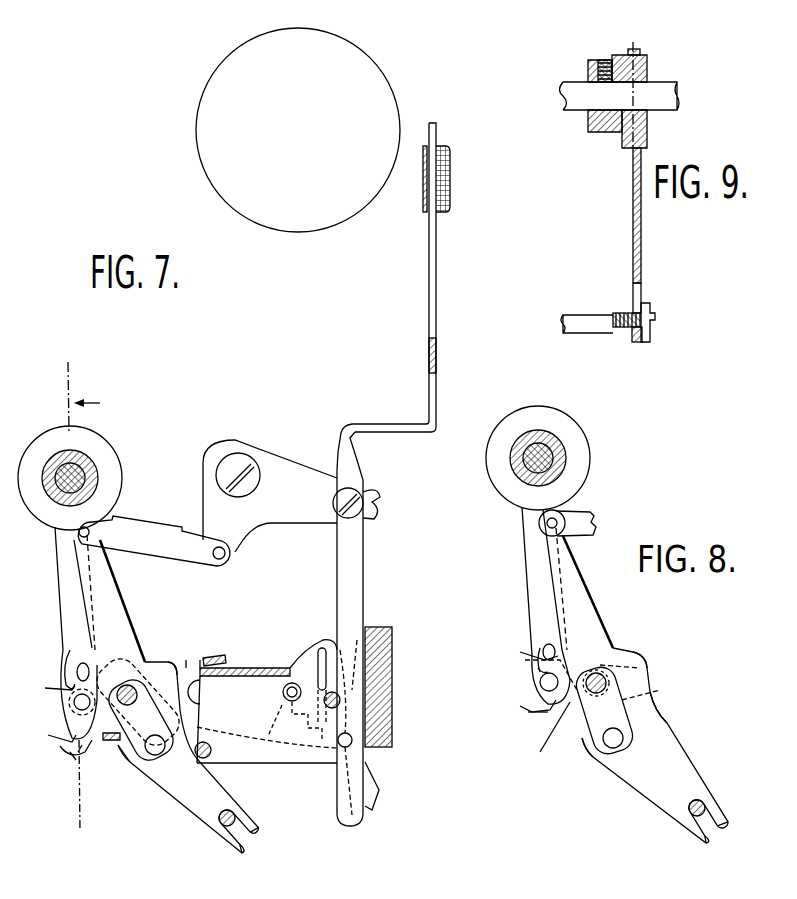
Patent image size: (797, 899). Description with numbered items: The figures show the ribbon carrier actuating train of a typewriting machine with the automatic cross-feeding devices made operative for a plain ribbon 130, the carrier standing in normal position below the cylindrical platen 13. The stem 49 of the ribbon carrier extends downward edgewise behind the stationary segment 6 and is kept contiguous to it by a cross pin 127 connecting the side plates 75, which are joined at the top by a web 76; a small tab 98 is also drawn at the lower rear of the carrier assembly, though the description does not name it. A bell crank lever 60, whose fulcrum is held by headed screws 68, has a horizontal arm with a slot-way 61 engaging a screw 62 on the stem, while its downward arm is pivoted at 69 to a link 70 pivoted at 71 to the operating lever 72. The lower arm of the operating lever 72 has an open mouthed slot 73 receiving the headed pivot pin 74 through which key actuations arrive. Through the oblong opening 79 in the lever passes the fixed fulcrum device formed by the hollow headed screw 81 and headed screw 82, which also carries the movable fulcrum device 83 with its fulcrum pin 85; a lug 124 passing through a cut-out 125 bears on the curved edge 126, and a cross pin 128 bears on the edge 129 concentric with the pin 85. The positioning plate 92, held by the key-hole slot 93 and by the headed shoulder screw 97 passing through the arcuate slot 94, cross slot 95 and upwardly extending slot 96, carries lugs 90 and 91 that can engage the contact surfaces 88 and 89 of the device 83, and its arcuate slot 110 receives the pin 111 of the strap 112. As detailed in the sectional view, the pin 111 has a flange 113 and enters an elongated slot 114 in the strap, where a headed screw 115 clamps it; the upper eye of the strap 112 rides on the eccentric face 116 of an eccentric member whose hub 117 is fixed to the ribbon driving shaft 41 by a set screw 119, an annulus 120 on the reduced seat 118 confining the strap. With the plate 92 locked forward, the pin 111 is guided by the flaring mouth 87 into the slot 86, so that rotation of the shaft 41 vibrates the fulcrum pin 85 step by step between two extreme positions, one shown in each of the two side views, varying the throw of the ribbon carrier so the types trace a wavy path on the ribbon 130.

In FIG. 7, the stationary segment 6 is at (392, 690).
In FIG. 7, the cylindrical platen 13 is at (393, 91).
In FIG. 7, the ribbon driving shaft 41 is at (63, 467).
In FIG. 8, the ribbon driving shaft 41 is at (522, 462).
In FIG. 9, the ribbon driving shaft 41 is at (665, 83).
In FIG. 7, the stem 49 is at (437, 403).
In FIG. 7, the bell crank lever 60 is at (270, 454).
In FIG. 7, the slot-way 61 is at (370, 505).
In FIG. 7, the screw 62 is at (348, 518).
In FIG. 7, the headed screws 68 is at (236, 496).
In FIG. 7, the pivot 69 is at (220, 560).
In FIG. 7, the link 70 is at (140, 532).
In FIG. 8, the link 70 is at (598, 520).
In FIG. 7, the pivot 71 is at (88, 526).
In FIG. 8, the pivot 71 is at (548, 515).
In FIG. 7, the operating lever 72 is at (122, 600).
In FIG. 8, the operating lever 72 is at (582, 575).
In FIG. 7, the open mouthed slot 73 is at (248, 840).
In FIG. 8, the open mouthed slot 73 is at (714, 832).
In FIG. 7, the headed pivot pin 74 is at (233, 818).
In FIG. 8, the headed pivot pin 74 is at (705, 808).
In FIG. 7, the side plates 75 is at (280, 763).
In FIG. 7, the web 76 is at (242, 676).
In FIG. 7, the oblong opening 79 is at (135, 755).
In FIG. 8, the oblong opening 79 is at (588, 740).
In FIG. 7, the hollow headed screw 81 is at (127, 685).
In FIG. 8, the hollow headed screw 81 is at (596, 674).
In FIG. 8, the headed screw 82 is at (597, 694).
In FIG. 7, the movable fulcrum device 83 is at (160, 765).
In FIG. 8, the movable fulcrum device 83 is at (563, 705).
In FIG. 7, the fulcrum pin 85 is at (158, 750).
In FIG. 8, the fulcrum pin 85 is at (618, 744).
In FIG. 7, the slot 86 is at (70, 755).
In FIG. 8, the slot 86 is at (551, 739).
In FIG. 7, the flaring mouth 87 is at (62, 690).
In FIG. 8, the flaring mouth 87 is at (526, 660).
In FIG. 7, the contact surface 88 is at (70, 680).
In FIG. 8, the contact surface 88 is at (551, 656).
In FIG. 7, the contact surface 89 is at (64, 748).
In FIG. 8, the contact surface 89 is at (535, 713).
In FIG. 7, the lug 90 is at (102, 662).
In FIG. 7, the lug 91 is at (112, 740).
In FIG. 7, the positioning plate 92 is at (78, 752).
In FIG. 7, the key-hole slot 93 is at (186, 660).
In FIG. 7, the arcuate slot 94 is at (321, 648).
In FIG. 7, the cross slot 95 is at (306, 721).
In FIG. 7, the upwardly extending slot 96 is at (268, 731).
In FIG. 7, the headed shoulder screw 97 is at (284, 698).
In FIG. 7, the tab 98 is at (372, 788).
In FIG. 7, the arcuate slot 110 is at (98, 785).
In FIG. 7, the pin 111 is at (72, 702).
In FIG. 8, the pin 111 is at (540, 685).
In FIG. 9, the pin 111 is at (583, 328).
In FIG. 7, the strap 112 is at (60, 578).
In FIG. 8, the strap 112 is at (528, 578).
In FIG. 9, the strap 112 is at (642, 242).
In FIG. 8, the flange 113 is at (540, 673).
In FIG. 9, the flange 113 is at (631, 311).
In FIG. 7, the elongated slot 114 is at (82, 662).
In FIG. 8, the elongated slot 114 is at (560, 653).
In FIG. 9, the elongated slot 114 is at (642, 295).
In FIG. 9, the headed screw 115 is at (650, 310).
In FIG. 7, the eccentric face 116 is at (88, 460).
In FIG. 8, the eccentric face 116 is at (557, 438).
In FIG. 9, the eccentric face 116 is at (634, 53).
In FIG. 9, the hub 117 is at (601, 133).
In FIG. 9, the reduced seat 118 is at (645, 122).
In FIG. 9, the set screw 119 is at (604, 59).
In FIG. 9, the annulus 120 is at (648, 56).
In FIG. 7, the lug 124 is at (216, 656).
In FIG. 7, the cut-out 125 is at (203, 654).
In FIG. 7, the curved edge 126 is at (182, 668).
In FIG. 8, the curved edge 126 is at (645, 664).
In FIG. 7, the cross pin 127 is at (338, 704).
In FIG. 7, the cross pin 128 is at (211, 750).
In FIG. 7, the edge 129 is at (205, 727).
In FIG. 8, the edge 129 is at (665, 724).
In FIG. 7, the plain ribbon 130 is at (451, 176).